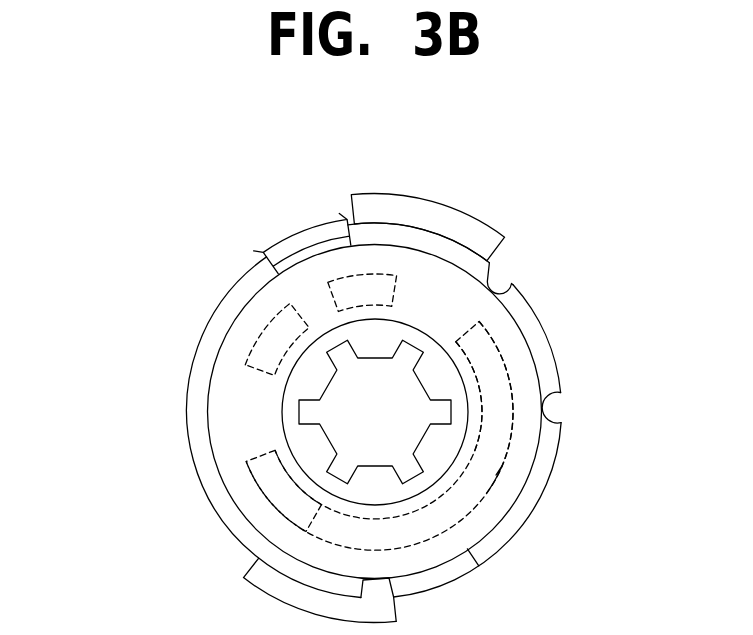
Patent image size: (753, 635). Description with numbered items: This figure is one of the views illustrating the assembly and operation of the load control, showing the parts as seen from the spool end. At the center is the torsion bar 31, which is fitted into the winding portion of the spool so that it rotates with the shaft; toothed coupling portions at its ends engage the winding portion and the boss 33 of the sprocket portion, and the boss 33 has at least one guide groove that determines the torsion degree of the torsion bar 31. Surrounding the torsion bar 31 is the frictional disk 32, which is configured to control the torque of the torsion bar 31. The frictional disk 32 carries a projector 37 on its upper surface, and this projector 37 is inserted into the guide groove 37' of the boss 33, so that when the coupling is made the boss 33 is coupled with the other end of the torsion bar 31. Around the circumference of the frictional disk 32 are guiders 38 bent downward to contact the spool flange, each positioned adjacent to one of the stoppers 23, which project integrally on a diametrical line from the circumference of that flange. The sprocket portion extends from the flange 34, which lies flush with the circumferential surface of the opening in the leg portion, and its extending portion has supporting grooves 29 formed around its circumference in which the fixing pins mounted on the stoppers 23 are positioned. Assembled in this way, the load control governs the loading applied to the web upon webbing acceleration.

The stopper 23 is at (415, 210).
The supporting groove 29 is at (556, 411).
The torsion bar 31 is at (404, 346).
The frictional disk 32 is at (185, 413).
The boss 33 is at (365, 313).
The flange 34 is at (213, 467).
The projector 37 is at (214, 511).
The guide groove 37' is at (531, 465).
The guider 38 is at (303, 247).